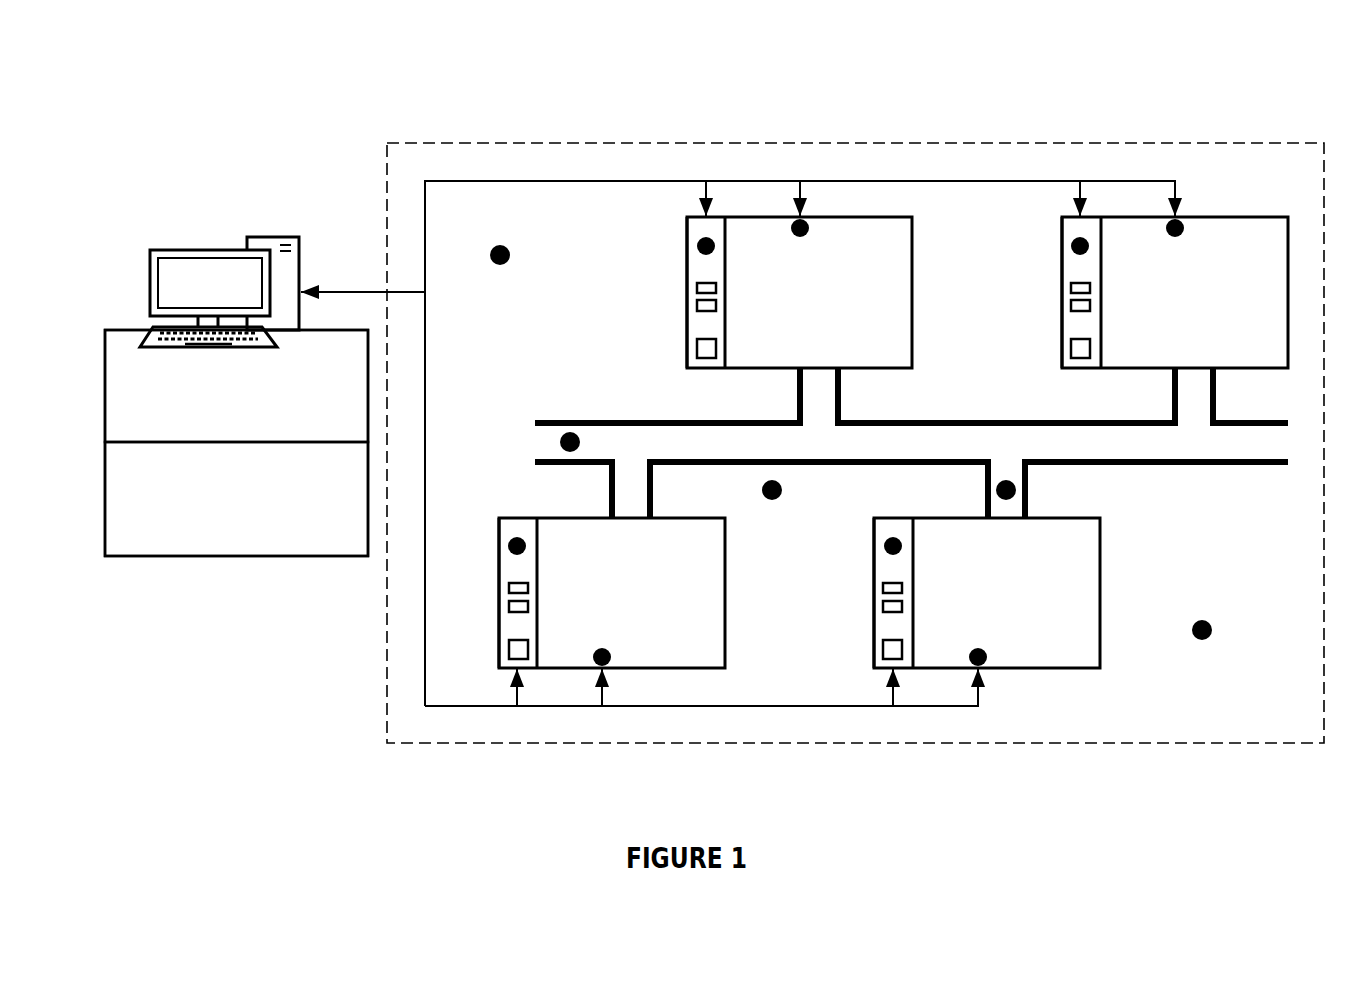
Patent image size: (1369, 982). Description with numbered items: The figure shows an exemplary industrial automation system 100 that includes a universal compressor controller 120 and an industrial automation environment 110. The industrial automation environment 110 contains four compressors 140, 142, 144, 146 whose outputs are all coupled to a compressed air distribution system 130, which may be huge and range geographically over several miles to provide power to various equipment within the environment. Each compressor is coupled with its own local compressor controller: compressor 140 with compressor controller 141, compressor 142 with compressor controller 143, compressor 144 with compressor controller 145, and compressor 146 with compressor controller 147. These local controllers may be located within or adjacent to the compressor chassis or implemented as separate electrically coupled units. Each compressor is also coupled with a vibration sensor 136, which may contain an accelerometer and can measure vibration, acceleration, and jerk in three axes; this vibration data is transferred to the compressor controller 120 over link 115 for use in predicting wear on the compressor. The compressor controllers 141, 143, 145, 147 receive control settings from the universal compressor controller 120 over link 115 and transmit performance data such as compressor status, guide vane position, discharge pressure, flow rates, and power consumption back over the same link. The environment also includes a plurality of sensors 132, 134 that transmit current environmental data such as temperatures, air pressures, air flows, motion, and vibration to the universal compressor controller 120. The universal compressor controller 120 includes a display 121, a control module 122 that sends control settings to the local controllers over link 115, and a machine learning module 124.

The industrial automation system 100 is at (389, 82).
The industrial automation environment 110 is at (835, 138).
The link 115 is at (738, 443).
The compressor controller 120 is at (240, 210).
The display 121 is at (219, 292).
The control module 122 is at (236, 386).
The machine learning module 124 is at (236, 499).
The compressed air distribution system 130 is at (911, 443).
The sensor 132 is at (561, 432).
The sensor 134 is at (511, 255).
The vibration sensor 136 is at (810, 228).
The compressor 140 is at (751, 306).
The compressor controller 141 is at (681, 331).
The compressor 142 is at (1126, 306).
The compressor controller 143 is at (1056, 331).
The compressor 144 is at (580, 562).
The compressor controller 145 is at (521, 516).
The compressor 146 is at (939, 607).
The compressor controller 147 is at (866, 633).